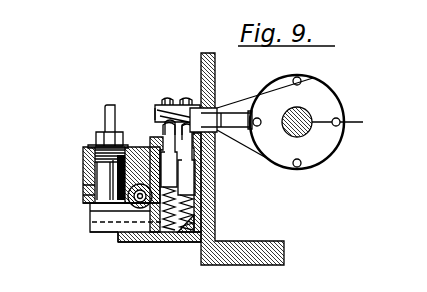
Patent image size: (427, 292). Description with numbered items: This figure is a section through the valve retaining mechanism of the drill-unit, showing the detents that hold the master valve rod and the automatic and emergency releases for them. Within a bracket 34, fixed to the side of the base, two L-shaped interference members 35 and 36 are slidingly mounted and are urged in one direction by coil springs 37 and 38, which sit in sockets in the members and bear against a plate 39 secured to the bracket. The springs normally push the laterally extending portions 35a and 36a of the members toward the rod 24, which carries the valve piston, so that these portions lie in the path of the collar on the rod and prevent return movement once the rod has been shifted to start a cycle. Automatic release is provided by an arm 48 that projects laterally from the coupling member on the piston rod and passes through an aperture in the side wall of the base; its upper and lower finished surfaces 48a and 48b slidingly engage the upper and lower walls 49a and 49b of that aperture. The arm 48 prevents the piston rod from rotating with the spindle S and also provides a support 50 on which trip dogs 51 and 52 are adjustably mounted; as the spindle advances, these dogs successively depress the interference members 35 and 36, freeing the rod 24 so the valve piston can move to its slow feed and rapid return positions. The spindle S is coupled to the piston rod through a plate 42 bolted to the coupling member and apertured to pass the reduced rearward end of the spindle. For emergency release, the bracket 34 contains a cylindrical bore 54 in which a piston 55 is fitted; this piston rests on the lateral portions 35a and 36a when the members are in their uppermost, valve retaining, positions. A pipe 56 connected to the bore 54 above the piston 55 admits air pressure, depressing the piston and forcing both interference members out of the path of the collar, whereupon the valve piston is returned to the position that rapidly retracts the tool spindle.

The rod 24 is at (134, 205).
The bracket 34 is at (85, 173).
The interference member 35 is at (185, 172).
The laterally extending portion 35a is at (93, 223).
The interference member 36 is at (165, 179).
The laterally extending portion 36a is at (92, 205).
The coil spring 37 is at (200, 222).
The coil spring 38 is at (150, 242).
The plate 39 is at (185, 243).
The plate 42 is at (325, 98).
The arm 48 is at (267, 76).
The upper finished surface 48a is at (185, 99).
The lower finished surface 48b is at (160, 105).
The upper wall 49a is at (218, 107).
The lower wall 49b is at (252, 150).
The support 50 is at (165, 99).
The trip dog 51 is at (163, 127).
The trip dog 52 is at (156, 117).
The cylindrical bore 54 is at (88, 159).
The piston 55 is at (85, 190).
The pipe 56 is at (105, 112).
The spindle S is at (344, 123).